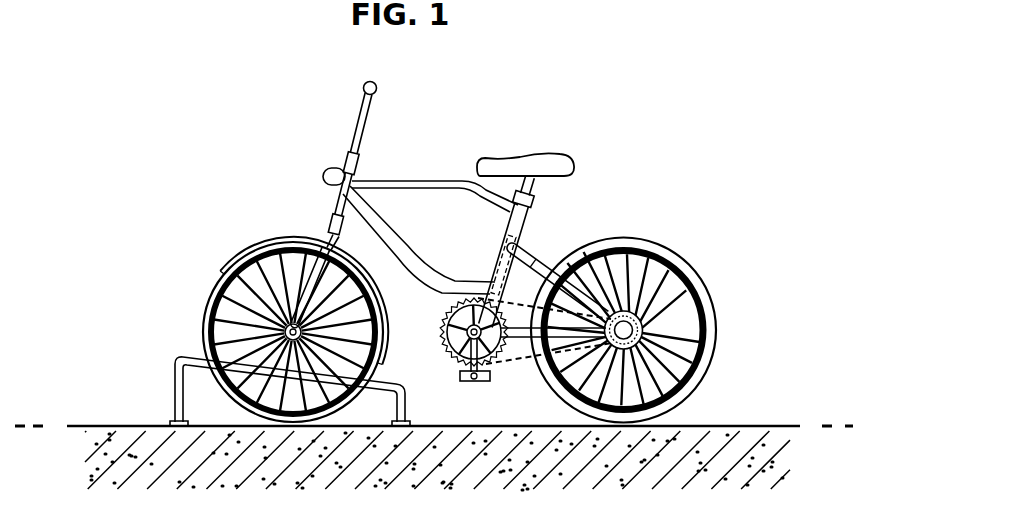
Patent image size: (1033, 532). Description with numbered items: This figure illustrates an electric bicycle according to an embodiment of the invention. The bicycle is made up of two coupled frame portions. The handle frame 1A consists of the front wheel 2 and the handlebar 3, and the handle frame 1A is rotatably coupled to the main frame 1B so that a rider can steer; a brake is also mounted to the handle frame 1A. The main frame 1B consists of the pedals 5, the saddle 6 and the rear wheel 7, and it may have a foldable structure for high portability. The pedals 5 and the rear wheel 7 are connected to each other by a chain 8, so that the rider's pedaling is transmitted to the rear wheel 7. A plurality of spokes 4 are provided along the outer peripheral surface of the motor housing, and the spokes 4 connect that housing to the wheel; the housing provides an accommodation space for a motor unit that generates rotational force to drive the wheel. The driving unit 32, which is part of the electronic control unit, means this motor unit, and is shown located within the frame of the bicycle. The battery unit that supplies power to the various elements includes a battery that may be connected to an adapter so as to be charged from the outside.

The handle frame 1A is at (320, 199).
The main frame 1B is at (402, 217).
The front wheel 2 is at (213, 293).
The handlebar 3 is at (358, 133).
The spokes 4 is at (634, 270).
The pedals 5 is at (452, 368).
The saddle 6 is at (528, 160).
The rear wheel 7 is at (702, 278).
The chain 8 is at (510, 372).
The driving unit 32 is at (496, 244).